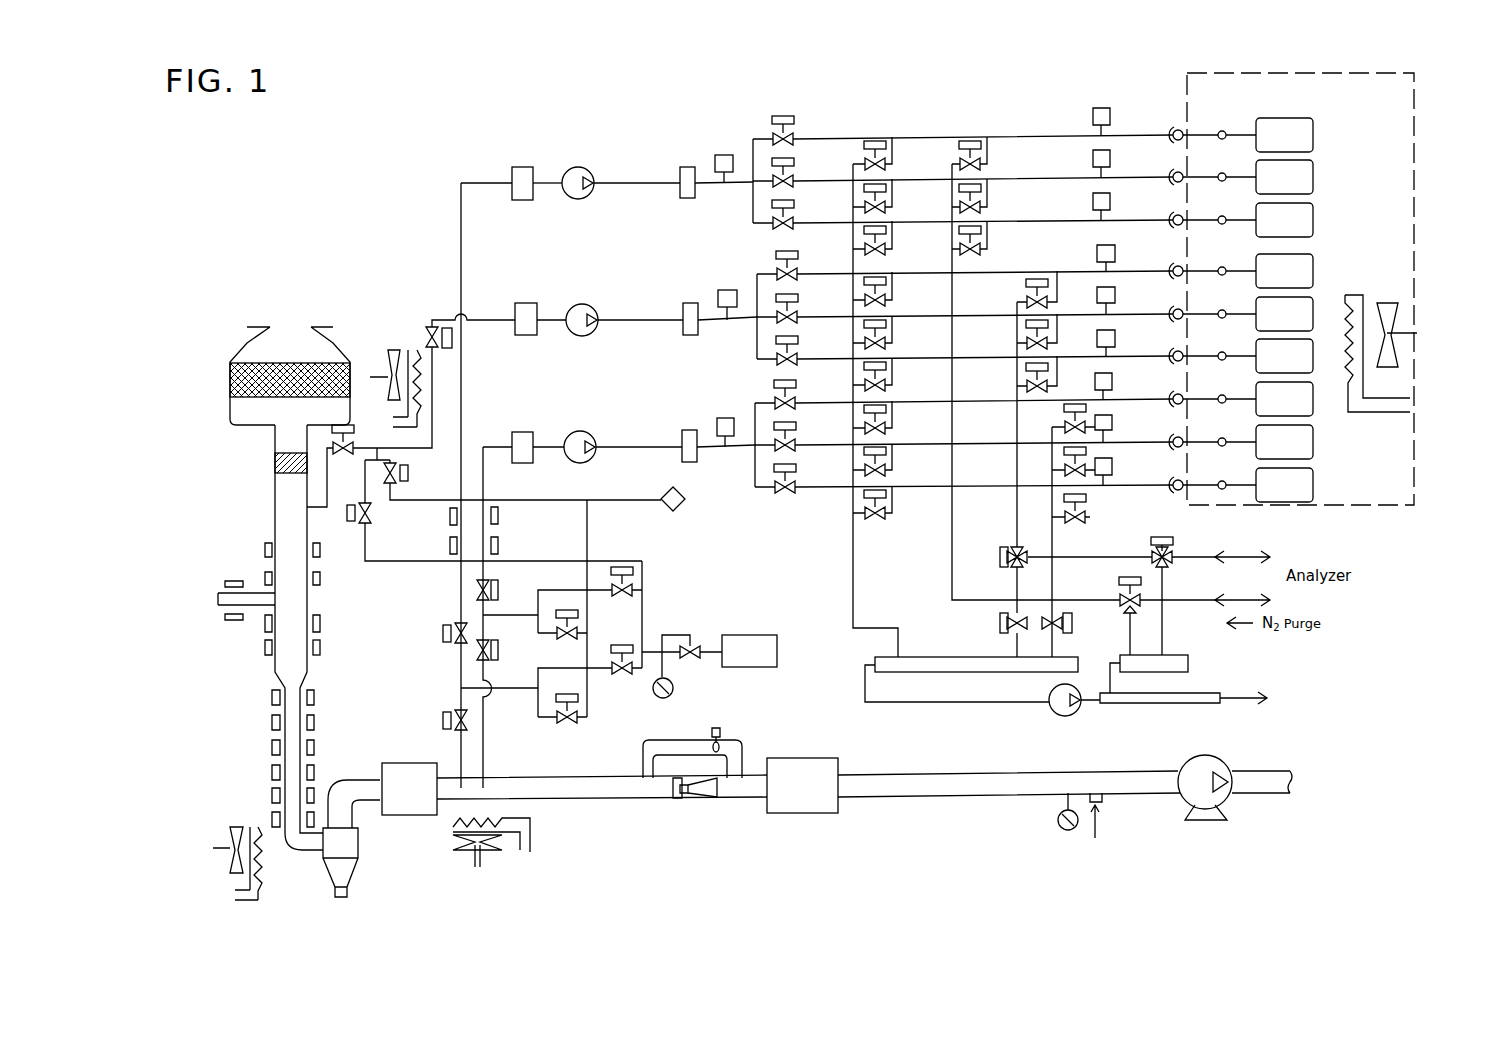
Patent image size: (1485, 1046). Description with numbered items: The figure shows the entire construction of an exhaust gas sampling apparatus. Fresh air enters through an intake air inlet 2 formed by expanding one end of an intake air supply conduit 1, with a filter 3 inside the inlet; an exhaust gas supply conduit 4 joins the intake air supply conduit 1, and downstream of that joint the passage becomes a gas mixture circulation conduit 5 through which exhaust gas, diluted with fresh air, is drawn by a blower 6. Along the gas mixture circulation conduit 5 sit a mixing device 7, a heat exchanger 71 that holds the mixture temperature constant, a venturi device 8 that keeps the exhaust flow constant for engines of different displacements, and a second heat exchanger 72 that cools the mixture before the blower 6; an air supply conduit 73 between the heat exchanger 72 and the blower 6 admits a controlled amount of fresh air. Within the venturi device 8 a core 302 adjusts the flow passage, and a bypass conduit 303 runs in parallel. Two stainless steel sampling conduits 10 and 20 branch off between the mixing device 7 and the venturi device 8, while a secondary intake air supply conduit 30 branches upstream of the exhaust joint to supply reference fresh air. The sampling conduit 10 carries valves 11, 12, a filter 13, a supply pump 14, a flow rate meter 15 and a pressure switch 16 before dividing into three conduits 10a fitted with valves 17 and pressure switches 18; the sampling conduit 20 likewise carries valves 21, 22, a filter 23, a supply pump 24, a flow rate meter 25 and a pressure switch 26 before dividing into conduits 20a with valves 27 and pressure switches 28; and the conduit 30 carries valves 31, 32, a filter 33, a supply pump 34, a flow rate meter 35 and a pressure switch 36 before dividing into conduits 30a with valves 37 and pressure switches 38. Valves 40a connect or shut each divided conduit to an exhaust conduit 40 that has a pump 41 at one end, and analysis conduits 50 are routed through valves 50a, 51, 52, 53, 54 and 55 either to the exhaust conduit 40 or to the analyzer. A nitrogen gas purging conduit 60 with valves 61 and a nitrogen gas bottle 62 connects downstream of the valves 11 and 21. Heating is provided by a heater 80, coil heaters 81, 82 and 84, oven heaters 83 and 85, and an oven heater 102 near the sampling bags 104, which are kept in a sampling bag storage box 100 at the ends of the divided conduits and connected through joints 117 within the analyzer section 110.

The intake air supply conduit 1 is at (284, 512).
The intake air inlet 2 is at (257, 345).
The filter 3 is at (242, 383).
The exhaust gas supply conduit 4 is at (222, 598).
The gas mixture circulation conduit 5 is at (272, 760).
The blower 6 is at (1203, 797).
The mixing device 7 is at (345, 845).
The venturi device 8 is at (700, 800).
The sampling conduit 10 is at (462, 358).
The divided conduits 10a is at (1043, 222).
The valve 11 is at (443, 720).
The valve 12 is at (443, 633).
The filter 13 is at (520, 170).
The supply pump 14 is at (577, 168).
The flow rate meter 15 is at (685, 168).
The pressure switch 16 is at (722, 155).
The valves 17 is at (790, 160).
The pressure switches 18 is at (1093, 115).
The sampling conduit 20 is at (637, 445).
The divided conduits 20a is at (765, 447).
The valve 21 is at (499, 650).
The valve 22 is at (499, 588).
The filter 23 is at (520, 455).
The supply pump 24 is at (580, 435).
The flow rate meter 25 is at (688, 447).
The pressure switch 26 is at (722, 420).
The valves 27 is at (793, 472).
The pressure switches 28 is at (1112, 425).
The secondary intake air supply conduit 30 is at (637, 315).
The divided conduits 30a is at (1003, 313).
The valve 31 is at (343, 456).
The valve 32 is at (428, 328).
The filter 33 is at (523, 312).
The supply pump 34 is at (580, 310).
The flow rate meter 35 is at (686, 305).
The pressure switch 36 is at (725, 292).
The valves 37 is at (780, 295).
The pressure sensors 38 is at (1113, 290).
The exhaust conduit 40 is at (855, 567).
The valves 40a is at (868, 152).
The pump 41 is at (1058, 705).
The analysis conduit 50 is at (953, 560).
The purge valves 50a is at (960, 148).
The valve 51 is at (1120, 597).
The valve 52 is at (1000, 557).
The valve 53 is at (1000, 624).
The valve 54 is at (1072, 628).
The valve 55 is at (1172, 548).
The nitrogen gas purging conduit 60 is at (543, 592).
The valves 61 is at (642, 590).
The nitrogen gas bottle 62 is at (728, 660).
The heat exchanger 71 is at (405, 773).
The heat exchanger 72 is at (810, 768).
The air supply conduit 73 is at (1097, 835).
The heater 80 is at (275, 465).
The coil heater 81 is at (322, 647).
The coil heater 82 is at (272, 795).
The oven heater 83 is at (262, 852).
The coil heater 84 is at (490, 515).
The oven heater 85 is at (394, 368).
The sampling bag storage box 100 is at (1335, 266).
The oven heater 102 is at (1362, 298).
The sampling bags 104 is at (1308, 220).
The analyzer unit 110 is at (1213, 125).
The joint 117 is at (1175, 170).
The core 302 is at (677, 800).
The bypass conduit 303 is at (643, 750).